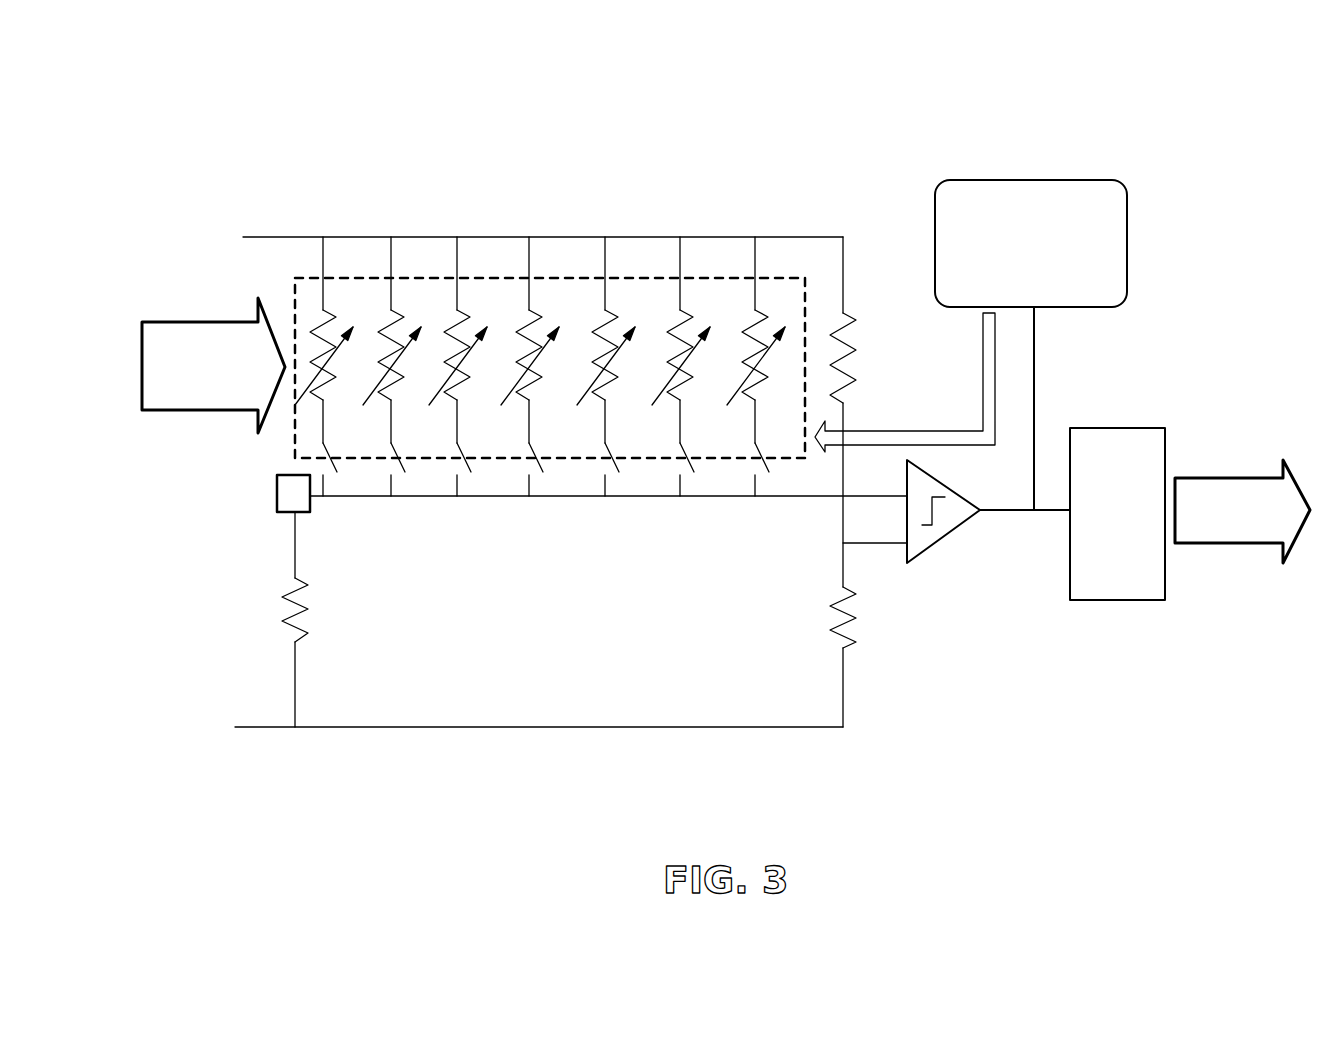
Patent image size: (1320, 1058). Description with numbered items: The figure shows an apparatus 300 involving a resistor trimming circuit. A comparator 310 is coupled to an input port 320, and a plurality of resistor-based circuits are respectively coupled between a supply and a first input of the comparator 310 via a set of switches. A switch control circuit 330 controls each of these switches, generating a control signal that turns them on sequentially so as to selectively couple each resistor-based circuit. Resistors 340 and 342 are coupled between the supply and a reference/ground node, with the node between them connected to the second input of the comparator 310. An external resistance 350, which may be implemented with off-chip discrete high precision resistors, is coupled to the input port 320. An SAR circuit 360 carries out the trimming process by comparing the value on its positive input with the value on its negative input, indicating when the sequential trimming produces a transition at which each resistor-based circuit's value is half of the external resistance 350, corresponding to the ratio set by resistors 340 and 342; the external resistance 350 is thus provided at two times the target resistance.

The apparatus 300 is at (1173, 110).
The comparator 310 is at (940, 479).
The input port 320 is at (287, 480).
The switch control circuit 330 is at (1093, 180).
The resistor 340 is at (845, 318).
The resistor 342 is at (853, 586).
The external resistance 350 is at (297, 581).
The SAR circuit 360 is at (1128, 428).